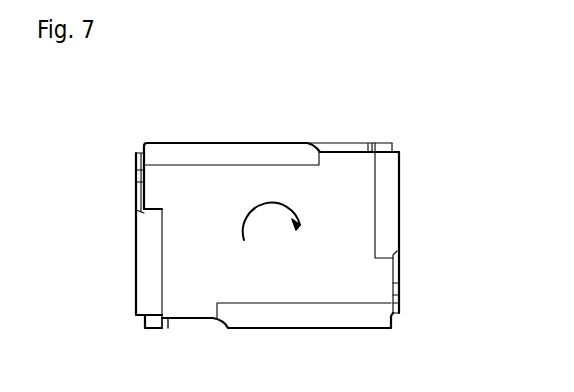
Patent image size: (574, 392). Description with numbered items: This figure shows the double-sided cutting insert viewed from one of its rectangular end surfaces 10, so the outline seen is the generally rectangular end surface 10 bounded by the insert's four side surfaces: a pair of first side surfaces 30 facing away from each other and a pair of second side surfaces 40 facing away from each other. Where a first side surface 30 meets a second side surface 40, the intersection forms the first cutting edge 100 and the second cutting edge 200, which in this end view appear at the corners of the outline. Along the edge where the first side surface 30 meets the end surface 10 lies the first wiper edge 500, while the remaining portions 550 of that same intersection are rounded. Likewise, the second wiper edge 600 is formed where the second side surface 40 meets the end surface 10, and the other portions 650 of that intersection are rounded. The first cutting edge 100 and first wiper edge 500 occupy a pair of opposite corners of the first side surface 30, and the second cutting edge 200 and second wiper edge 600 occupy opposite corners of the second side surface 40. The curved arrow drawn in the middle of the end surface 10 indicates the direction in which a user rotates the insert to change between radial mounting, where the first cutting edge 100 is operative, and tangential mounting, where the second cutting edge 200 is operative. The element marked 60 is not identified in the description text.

The end surface 10 is at (160, 282).
The first side surface 30 is at (236, 141).
The second side surface 40 is at (400, 213).
The terminal plates 60 is at (400, 290).
The first cutting edge 100 is at (400, 152).
The second cutting edge 200 is at (393, 142).
The first wiper edge 500 is at (347, 150).
The rounded portions 550 is at (174, 150).
The second wiper edge 600 is at (137, 175).
The rounded portions 650 is at (145, 248).